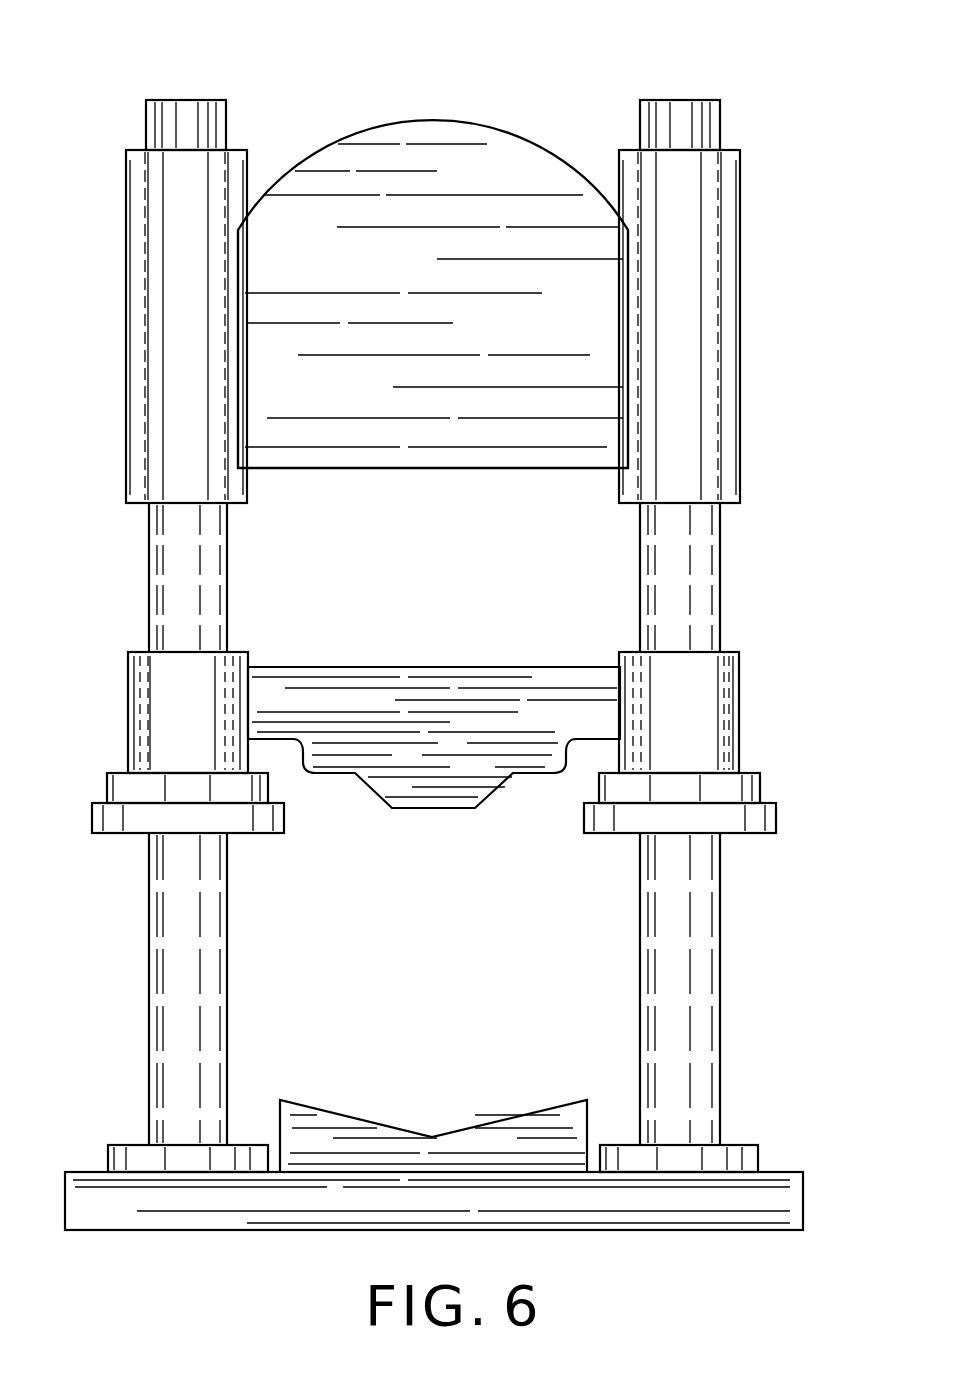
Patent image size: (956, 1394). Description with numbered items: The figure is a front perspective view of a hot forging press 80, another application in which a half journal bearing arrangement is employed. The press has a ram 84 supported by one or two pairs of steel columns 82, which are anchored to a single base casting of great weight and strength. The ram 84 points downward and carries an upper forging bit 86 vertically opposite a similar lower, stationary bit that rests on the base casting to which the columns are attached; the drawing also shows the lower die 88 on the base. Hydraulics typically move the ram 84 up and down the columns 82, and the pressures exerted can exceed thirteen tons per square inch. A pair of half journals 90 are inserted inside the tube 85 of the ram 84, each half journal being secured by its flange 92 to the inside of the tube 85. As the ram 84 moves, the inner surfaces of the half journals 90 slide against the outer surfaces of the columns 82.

The hot forging press 80 is at (546, 117).
The steel columns 82 is at (163, 1020).
The ram 84 is at (437, 660).
The tube 85 is at (128, 722).
The upper forging bit 86 is at (415, 800).
The lower die 88 is at (470, 1143).
The half journals 90 is at (186, 720).
The flange 92 is at (93, 822).